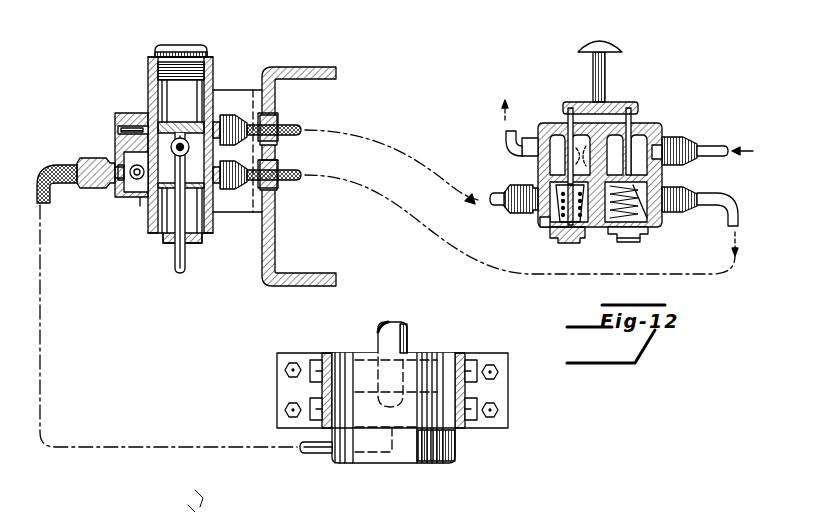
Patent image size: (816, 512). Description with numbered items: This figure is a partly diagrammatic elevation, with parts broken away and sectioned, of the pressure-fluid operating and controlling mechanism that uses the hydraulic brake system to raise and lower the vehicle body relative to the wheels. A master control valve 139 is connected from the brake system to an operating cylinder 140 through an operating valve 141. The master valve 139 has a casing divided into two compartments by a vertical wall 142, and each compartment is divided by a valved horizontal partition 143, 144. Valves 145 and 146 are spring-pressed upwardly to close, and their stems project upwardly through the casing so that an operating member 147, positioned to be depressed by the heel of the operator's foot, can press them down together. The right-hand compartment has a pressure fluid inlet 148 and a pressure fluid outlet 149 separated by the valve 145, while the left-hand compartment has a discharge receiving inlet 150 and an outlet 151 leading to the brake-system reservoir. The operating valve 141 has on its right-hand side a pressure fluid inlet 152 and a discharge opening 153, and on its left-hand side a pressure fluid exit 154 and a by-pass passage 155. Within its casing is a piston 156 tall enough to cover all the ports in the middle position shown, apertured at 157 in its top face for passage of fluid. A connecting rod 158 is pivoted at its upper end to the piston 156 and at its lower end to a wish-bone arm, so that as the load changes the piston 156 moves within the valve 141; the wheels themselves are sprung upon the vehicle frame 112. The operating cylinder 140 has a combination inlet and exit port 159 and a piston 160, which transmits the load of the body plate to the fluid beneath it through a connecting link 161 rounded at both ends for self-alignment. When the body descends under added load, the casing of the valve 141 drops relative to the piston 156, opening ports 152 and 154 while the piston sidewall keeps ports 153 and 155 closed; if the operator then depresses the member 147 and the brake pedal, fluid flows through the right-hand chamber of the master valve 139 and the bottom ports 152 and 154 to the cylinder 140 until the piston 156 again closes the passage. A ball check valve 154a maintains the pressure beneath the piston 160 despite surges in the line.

The vehicle frame 112 is at (312, 67).
The master control valve 139 is at (654, 128).
The operating cylinder 140 is at (350, 460).
The operating valve 141 is at (137, 113).
The vertical wall 142 is at (574, 242).
The valved horizontal partition 143 is at (671, 135).
The valved horizontal partition 144 is at (527, 145).
The valve 145 is at (647, 228).
The valve 146 is at (543, 226).
The operating member 147 is at (606, 44).
The pressure fluid inlet 148 is at (706, 146).
The pressure fluid outlet 149 is at (712, 205).
The discharge receiving inlet 150 is at (505, 192).
The outlet 151 is at (500, 132).
The pressure fluid inlet 152 is at (224, 192).
The discharge opening 153 is at (226, 115).
The pressure fluid exit 154 is at (146, 200).
The ball check valve 154a is at (128, 160).
The by-pass passage 155 is at (127, 124).
The piston 156 is at (158, 212).
The aperture 157 is at (193, 120).
The connecting rod 158 is at (177, 258).
The combination inlet and exit port 159 is at (322, 456).
The piston 160 is at (412, 466).
The connecting link 161 is at (405, 334).